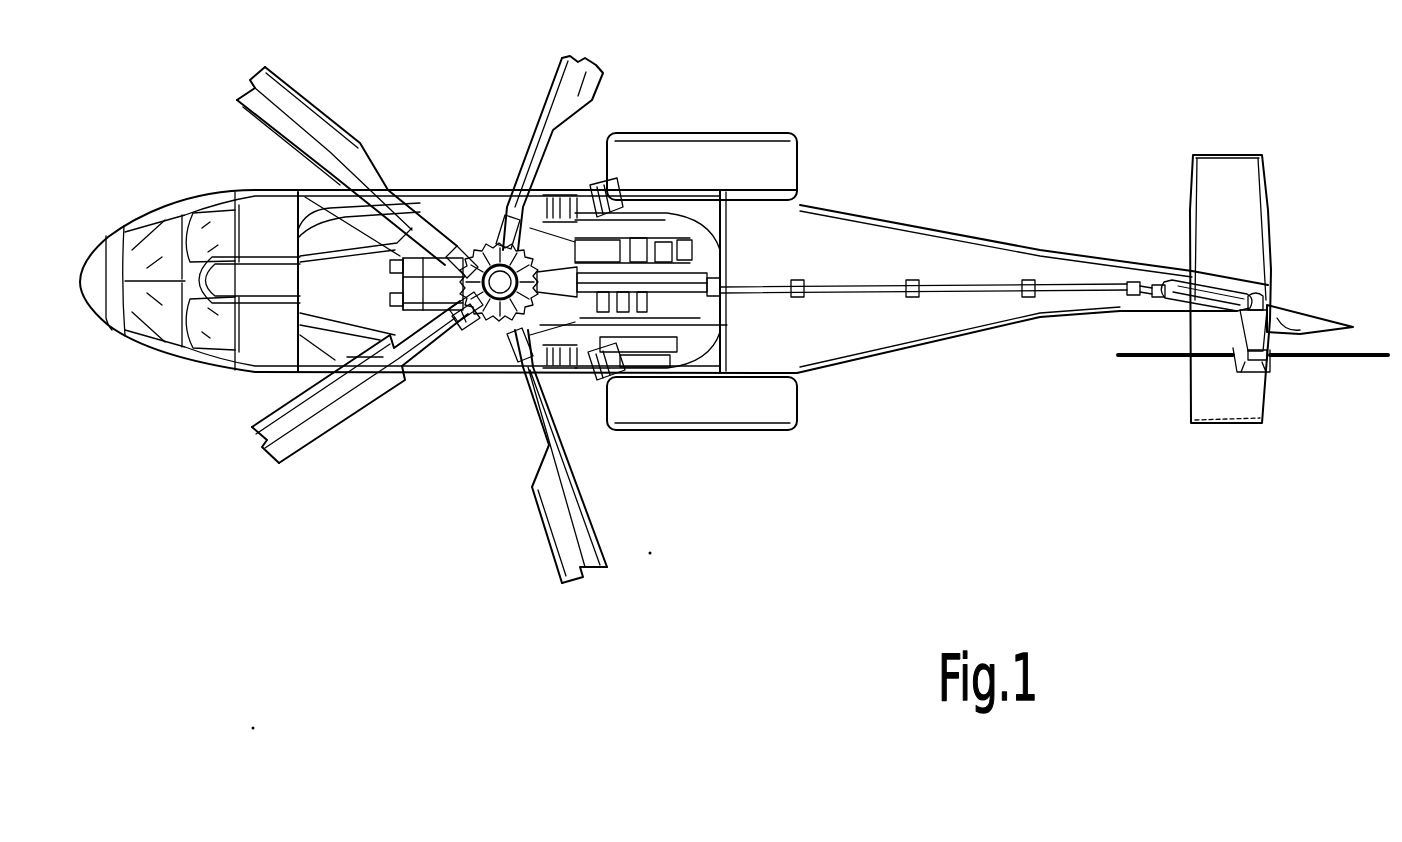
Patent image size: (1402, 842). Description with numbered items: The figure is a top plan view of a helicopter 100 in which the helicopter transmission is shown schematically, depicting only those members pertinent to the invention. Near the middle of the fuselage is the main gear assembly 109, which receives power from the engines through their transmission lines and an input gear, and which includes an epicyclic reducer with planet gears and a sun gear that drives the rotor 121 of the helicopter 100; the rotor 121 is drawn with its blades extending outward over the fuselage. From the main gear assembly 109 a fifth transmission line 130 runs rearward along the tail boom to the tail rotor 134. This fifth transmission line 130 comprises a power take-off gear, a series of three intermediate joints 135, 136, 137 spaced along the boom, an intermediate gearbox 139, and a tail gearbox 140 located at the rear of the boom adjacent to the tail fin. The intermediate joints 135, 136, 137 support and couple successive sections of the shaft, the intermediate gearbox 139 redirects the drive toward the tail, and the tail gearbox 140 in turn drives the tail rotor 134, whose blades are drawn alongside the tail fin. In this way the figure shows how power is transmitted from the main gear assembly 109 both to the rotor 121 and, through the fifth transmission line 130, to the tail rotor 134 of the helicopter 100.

The helicopter 100 is at (1043, 155).
The main gear assembly 109 is at (478, 224).
The rotor 121 is at (480, 328).
The fifth transmission line 130 is at (978, 281).
The tail rotor 134 is at (1270, 360).
The intermediate joint 135 is at (803, 305).
The intermediate joint 136 is at (917, 305).
The intermediate joint 137 is at (1028, 306).
The intermediate gearbox 139 is at (1145, 282).
The tail gearbox 140 is at (1280, 286).